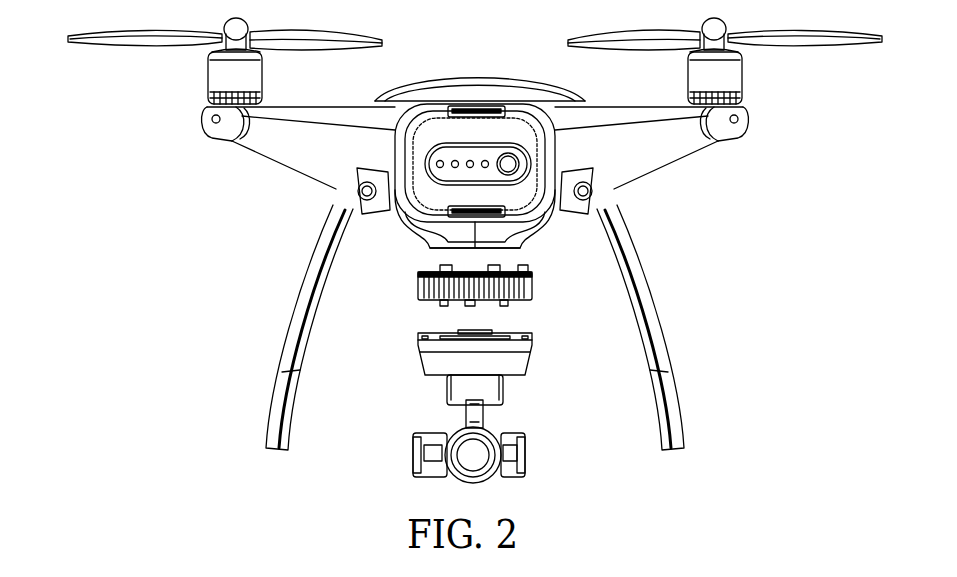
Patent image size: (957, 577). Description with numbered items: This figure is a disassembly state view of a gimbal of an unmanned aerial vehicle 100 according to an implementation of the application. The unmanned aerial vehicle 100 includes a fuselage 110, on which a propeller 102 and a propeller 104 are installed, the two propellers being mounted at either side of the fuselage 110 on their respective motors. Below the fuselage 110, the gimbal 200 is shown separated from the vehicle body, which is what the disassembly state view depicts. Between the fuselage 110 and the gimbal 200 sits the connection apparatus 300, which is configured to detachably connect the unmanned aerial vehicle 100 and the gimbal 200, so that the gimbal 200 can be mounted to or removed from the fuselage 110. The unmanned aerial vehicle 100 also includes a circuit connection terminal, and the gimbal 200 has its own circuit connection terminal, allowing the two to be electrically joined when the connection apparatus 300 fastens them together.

The unmanned aerial vehicle 100 is at (557, 233).
The propeller 102 is at (826, 50).
The propeller 104 is at (148, 46).
The fuselage 110 is at (318, 150).
The gimbal 200 is at (522, 365).
The connection apparatus 300 is at (418, 292).